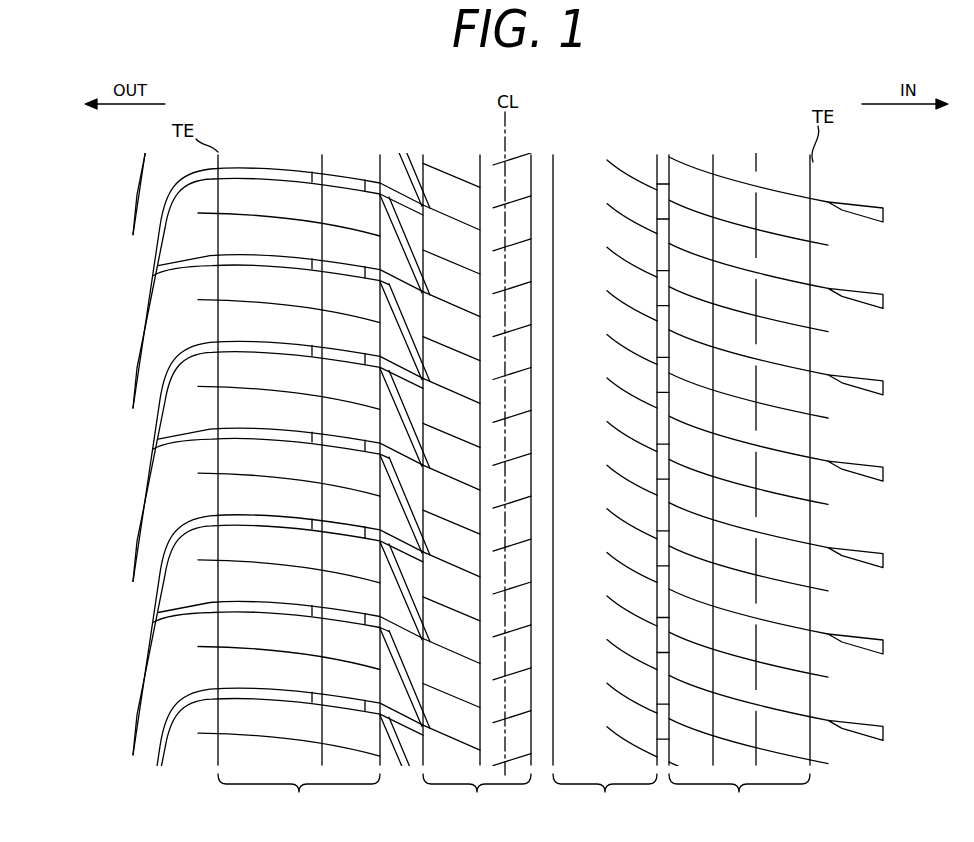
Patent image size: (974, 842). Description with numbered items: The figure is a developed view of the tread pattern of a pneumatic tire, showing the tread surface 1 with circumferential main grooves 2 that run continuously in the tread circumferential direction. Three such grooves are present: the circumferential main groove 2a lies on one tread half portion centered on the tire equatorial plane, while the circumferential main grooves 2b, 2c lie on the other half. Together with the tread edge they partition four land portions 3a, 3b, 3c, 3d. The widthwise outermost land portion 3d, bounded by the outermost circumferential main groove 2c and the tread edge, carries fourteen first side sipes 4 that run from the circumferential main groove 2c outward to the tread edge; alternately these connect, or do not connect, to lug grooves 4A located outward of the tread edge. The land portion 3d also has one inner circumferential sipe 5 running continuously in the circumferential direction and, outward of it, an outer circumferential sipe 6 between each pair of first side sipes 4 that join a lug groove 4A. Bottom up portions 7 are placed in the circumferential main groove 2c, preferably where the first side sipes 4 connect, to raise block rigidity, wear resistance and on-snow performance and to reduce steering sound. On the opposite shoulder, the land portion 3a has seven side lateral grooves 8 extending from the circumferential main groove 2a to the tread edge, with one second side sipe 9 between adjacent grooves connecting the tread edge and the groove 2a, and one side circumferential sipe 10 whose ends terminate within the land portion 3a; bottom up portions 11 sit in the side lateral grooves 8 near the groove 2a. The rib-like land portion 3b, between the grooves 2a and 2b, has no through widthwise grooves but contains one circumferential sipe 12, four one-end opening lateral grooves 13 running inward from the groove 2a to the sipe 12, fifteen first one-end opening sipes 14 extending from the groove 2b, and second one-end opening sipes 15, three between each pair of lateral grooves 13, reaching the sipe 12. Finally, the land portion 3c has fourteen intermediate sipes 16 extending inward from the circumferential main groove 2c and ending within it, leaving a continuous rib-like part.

The tread surface 1 is at (768, 119).
The circumferential main grooves 2 is at (537, 453).
The circumferential main groove 2a is at (392, 180).
The circumferential main groove 2b is at (545, 158).
The outermost circumferential main groove 2c is at (663, 163).
The land portion 3a is at (299, 795).
The rib-like land portion 3b is at (477, 795).
The land portion 3c is at (605, 795).
The widthwise outermost land portion 3d is at (739, 795).
The first side sipes 4 is at (787, 190).
The lug grooves 4A is at (847, 202).
The inner circumferential sipe 5 is at (712, 177).
The outer circumferential sipe 6 is at (758, 243).
The bottom up portions 7 is at (667, 205).
The side lateral grooves 8 is at (229, 265).
The second side sipe 9 is at (288, 213).
The side circumferential sipes 10 is at (318, 232).
The bottom up portions 11 is at (337, 266).
The circumferential sipe 12 is at (483, 165).
The one-end opening lateral grooves 13 is at (432, 210).
The first one-end opening sipes 14 is at (517, 195).
The second one-end opening sipes 15 is at (468, 181).
The intermediate sipes 16 is at (628, 240).